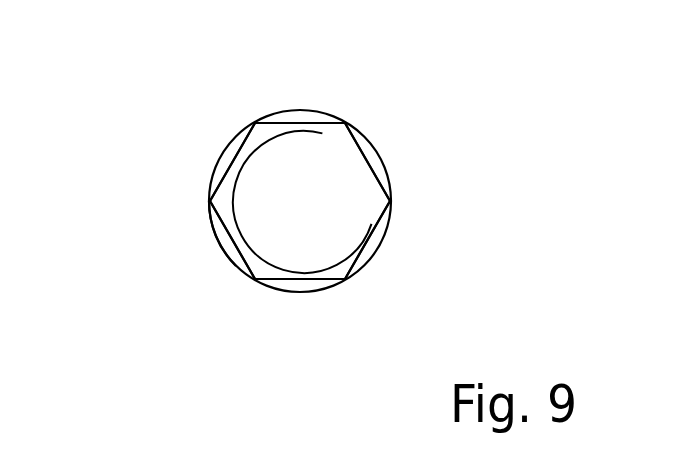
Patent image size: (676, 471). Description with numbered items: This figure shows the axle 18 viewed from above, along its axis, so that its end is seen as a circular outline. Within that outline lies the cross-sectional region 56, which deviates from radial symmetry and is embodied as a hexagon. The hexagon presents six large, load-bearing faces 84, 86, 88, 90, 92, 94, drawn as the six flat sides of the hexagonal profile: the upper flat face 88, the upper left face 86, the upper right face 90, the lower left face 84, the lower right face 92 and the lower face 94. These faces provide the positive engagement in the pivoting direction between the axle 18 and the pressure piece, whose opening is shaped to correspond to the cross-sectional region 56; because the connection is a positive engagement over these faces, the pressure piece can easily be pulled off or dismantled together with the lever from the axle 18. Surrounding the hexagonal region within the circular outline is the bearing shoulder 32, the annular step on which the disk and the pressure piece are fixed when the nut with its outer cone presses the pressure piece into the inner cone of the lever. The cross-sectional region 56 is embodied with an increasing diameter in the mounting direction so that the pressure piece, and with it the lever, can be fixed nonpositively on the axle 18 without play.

The axle 18 is at (384, 141).
The load-bearing face 88 is at (293, 123).
The load-bearing face 86 is at (227, 171).
The load-bearing face 90 is at (373, 172).
The load-bearing face 84 is at (234, 243).
The load-bearing face 92 is at (362, 251).
The bearing shoulder 32 is at (140, 318).
The cross-sectional region 56 is at (238, 357).
The load-bearing face 94 is at (306, 279).